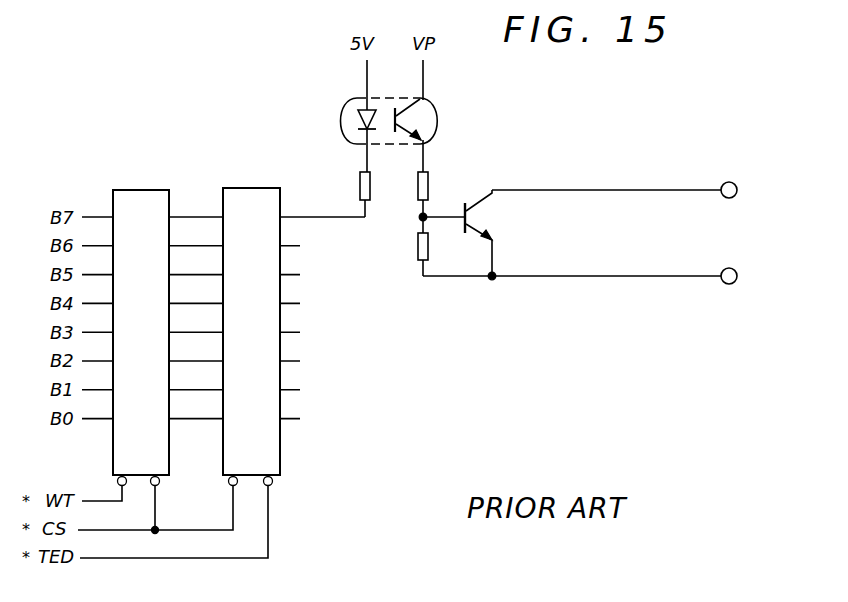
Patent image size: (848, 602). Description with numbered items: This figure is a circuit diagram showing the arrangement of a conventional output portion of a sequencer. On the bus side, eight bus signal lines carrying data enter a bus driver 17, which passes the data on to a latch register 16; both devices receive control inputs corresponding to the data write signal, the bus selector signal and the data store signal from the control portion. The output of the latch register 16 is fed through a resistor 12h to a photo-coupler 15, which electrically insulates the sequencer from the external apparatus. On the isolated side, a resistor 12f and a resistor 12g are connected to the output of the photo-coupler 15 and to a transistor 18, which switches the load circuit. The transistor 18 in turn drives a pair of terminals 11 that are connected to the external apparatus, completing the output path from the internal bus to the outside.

The terminals 11 is at (730, 182).
The resistor 12f is at (431, 186).
The resistor 12g is at (416, 249).
The resistor 12h is at (360, 186).
The photo-coupler 15 is at (437, 118).
The latch register 16 is at (245, 194).
The bus driver 17 is at (134, 196).
The transistor 18 is at (505, 217).